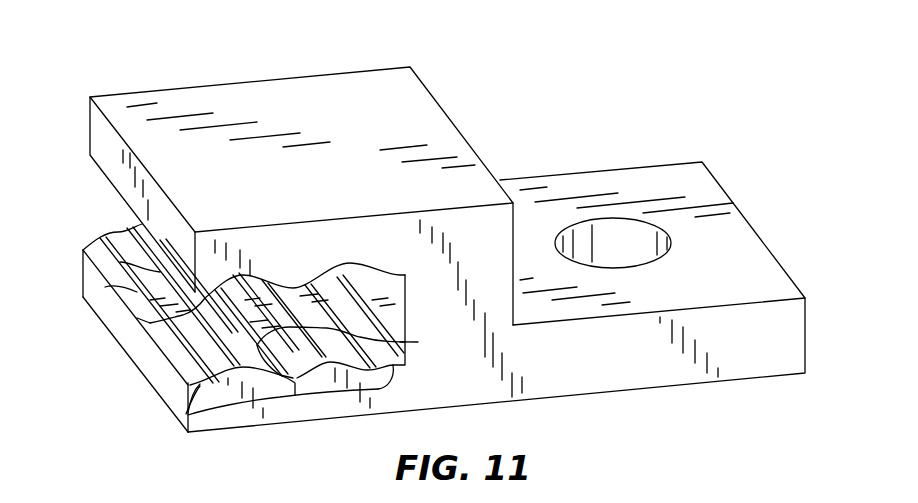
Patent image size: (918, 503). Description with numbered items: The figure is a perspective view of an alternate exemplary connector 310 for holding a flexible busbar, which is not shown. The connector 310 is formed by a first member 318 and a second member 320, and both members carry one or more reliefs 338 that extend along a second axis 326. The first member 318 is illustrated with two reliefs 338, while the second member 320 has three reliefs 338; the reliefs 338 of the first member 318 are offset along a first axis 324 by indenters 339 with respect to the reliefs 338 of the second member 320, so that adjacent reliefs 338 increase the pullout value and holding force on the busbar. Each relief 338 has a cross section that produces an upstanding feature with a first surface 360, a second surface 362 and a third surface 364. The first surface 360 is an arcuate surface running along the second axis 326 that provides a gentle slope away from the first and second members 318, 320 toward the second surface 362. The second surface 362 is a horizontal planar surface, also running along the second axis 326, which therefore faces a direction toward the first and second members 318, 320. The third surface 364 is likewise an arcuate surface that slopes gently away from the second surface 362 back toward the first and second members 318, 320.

The connector 310 is at (570, 70).
The first member 318 is at (100, 137).
The second member 320 is at (165, 372).
The first axis 324 is at (785, 408).
The second axis 326 is at (122, 110).
The reliefs 338 is at (186, 414).
The indenters 339 is at (137, 322).
The first surface 360 is at (137, 292).
The second surface 362 is at (160, 272).
The third surface 364 is at (405, 343).